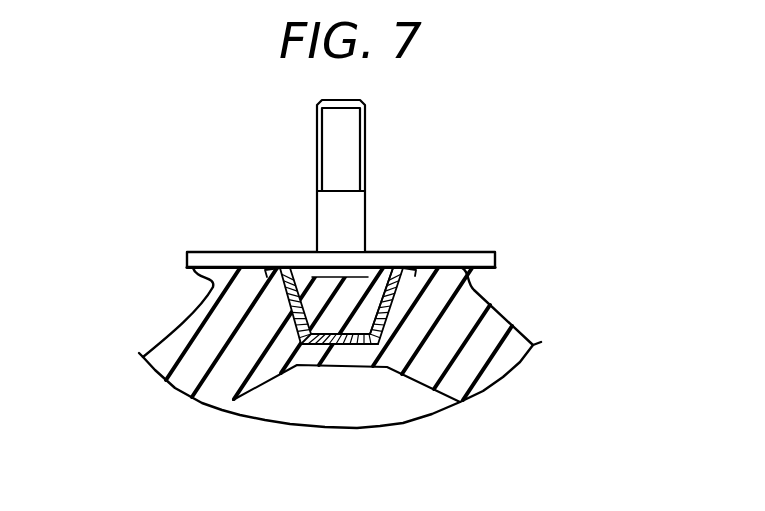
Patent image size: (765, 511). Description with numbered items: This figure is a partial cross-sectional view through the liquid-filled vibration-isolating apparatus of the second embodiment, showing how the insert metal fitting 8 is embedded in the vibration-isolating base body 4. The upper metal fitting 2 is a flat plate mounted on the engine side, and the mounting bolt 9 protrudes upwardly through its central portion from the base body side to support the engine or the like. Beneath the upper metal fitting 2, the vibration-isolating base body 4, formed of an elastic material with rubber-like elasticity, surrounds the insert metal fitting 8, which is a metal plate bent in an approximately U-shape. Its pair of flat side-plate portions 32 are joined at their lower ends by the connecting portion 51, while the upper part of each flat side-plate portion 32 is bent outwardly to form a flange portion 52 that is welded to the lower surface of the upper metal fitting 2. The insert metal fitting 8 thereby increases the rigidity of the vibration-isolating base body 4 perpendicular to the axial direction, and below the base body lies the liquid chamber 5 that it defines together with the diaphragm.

The upper metal fitting 2 is at (390, 258).
The vibration-isolating base body 4 is at (227, 323).
The liquid chamber 5 is at (297, 398).
The insert metal fitting 8 is at (294, 338).
The mounting bolt 9 is at (347, 157).
The flat side-plate portions 32 is at (405, 318).
The connecting portion 51 is at (357, 348).
The flange portions 52 is at (274, 267).